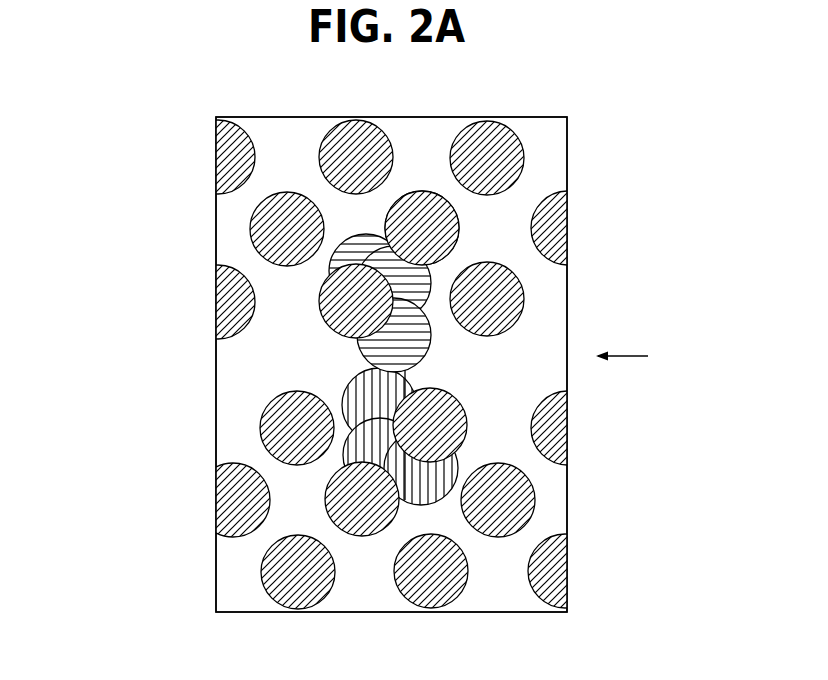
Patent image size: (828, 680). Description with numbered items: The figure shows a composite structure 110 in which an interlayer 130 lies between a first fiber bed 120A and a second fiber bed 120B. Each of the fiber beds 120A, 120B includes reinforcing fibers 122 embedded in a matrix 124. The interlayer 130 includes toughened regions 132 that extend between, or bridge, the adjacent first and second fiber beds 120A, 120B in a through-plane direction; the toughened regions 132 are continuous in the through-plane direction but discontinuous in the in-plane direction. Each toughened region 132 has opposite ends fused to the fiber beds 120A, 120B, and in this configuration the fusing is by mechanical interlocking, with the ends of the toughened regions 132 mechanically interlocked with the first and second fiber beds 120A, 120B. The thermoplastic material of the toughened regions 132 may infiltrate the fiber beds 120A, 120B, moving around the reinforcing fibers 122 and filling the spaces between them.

The composite material 110 is at (162, 133).
The reinforcing fibers 122 is at (252, 230).
The matrix 124 is at (297, 147).
The toughened regions 132 is at (348, 387).
The first fiber bed 120A is at (598, 115).
The second fiber bed 120B is at (598, 390).
The interlayer 130 is at (645, 358).